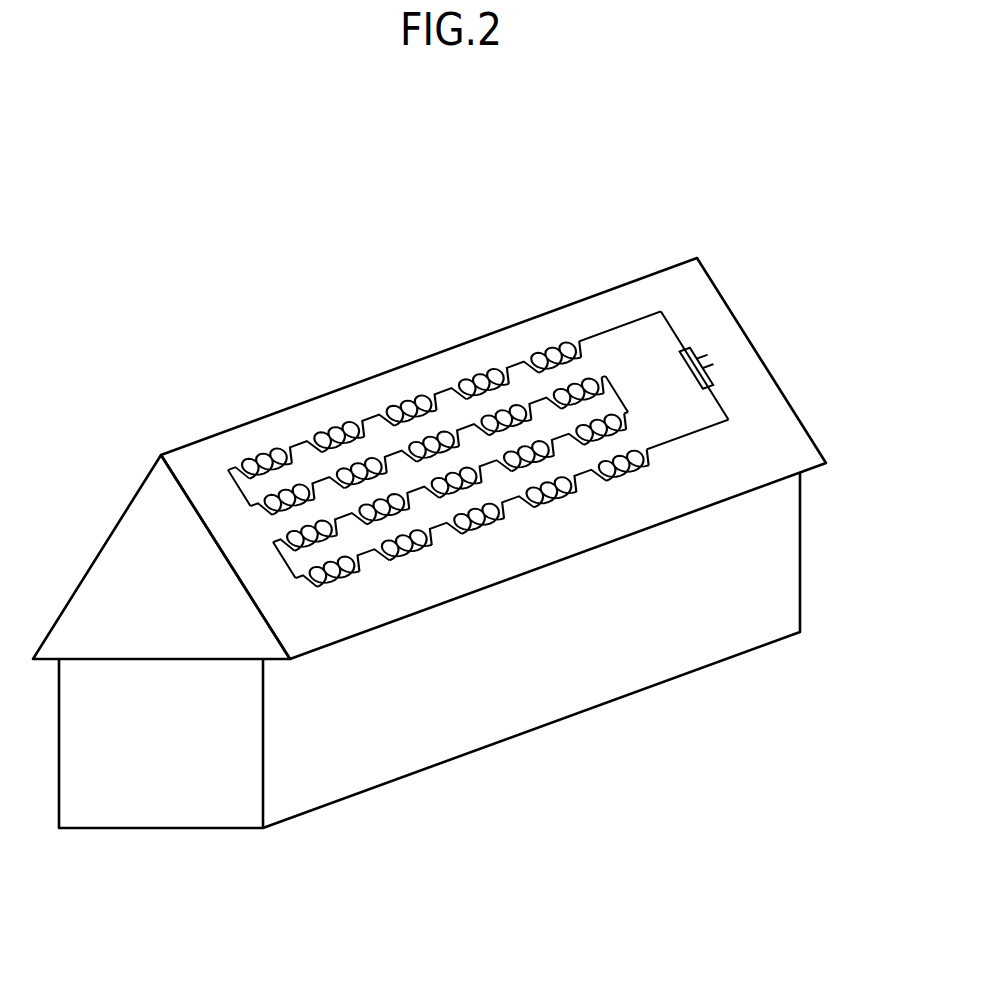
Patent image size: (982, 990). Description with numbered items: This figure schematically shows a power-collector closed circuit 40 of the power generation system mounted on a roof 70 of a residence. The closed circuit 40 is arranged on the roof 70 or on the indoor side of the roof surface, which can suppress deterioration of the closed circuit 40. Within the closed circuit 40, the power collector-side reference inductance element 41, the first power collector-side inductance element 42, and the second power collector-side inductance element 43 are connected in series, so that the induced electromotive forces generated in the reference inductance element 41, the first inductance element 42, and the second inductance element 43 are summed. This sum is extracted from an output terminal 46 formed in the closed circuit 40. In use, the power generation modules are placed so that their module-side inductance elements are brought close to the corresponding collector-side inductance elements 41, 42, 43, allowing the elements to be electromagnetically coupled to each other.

The power-collector closed circuit 40 is at (678, 332).
The power collector-side reference inductance element 41 is at (553, 342).
The first power collector-side inductance element 42 is at (471, 367).
The second power collector-side inductance element 43 is at (629, 481).
The output terminal 46 is at (720, 362).
The roof 70 is at (797, 410).